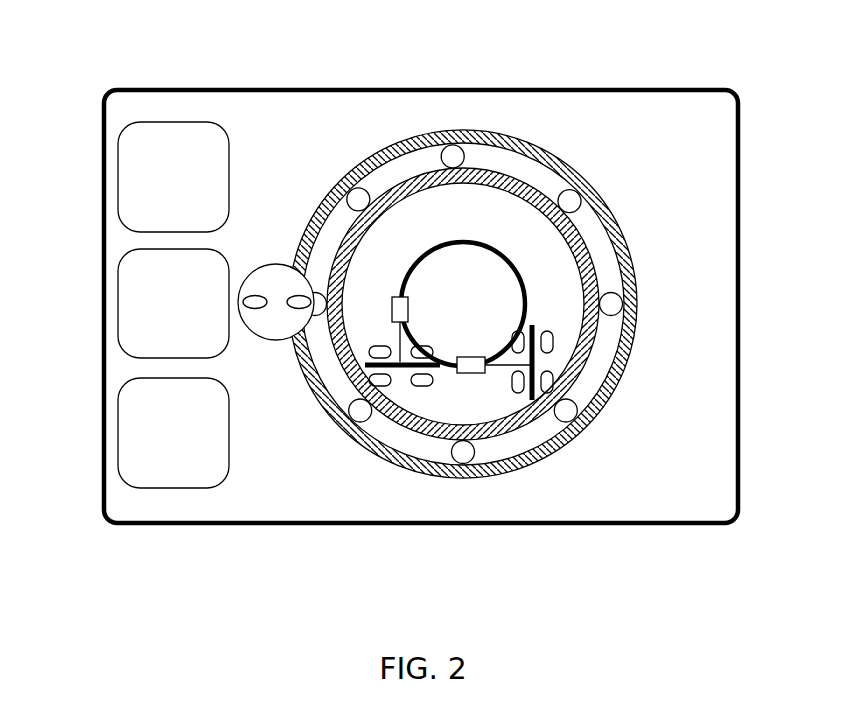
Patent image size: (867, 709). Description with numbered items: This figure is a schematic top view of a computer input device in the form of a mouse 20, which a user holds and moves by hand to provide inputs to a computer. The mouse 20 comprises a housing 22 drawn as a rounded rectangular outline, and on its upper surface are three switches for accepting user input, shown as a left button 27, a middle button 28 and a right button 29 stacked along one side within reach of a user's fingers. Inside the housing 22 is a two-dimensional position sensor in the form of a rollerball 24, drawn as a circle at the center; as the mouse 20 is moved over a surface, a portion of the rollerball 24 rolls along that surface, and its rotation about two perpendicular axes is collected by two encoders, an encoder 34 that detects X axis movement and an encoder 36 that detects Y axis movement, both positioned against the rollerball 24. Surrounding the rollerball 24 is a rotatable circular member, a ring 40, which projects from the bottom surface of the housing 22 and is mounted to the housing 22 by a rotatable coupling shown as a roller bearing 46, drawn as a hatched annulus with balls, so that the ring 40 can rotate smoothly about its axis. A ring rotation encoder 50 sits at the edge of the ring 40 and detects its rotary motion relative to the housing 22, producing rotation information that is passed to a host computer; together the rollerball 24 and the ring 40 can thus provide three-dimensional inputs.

The mouse 20 is at (425, 305).
The housing 22 is at (622, 88).
The rollerball 24 is at (474, 284).
The left button 27 is at (165, 433).
The middle button 28 is at (165, 301).
The right button 29 is at (165, 175).
The encoder 34 is at (512, 401).
The encoder 36 is at (403, 388).
The ring 40 is at (394, 140).
The roller bearing 46 is at (338, 188).
The ring rotation encoder 50 is at (268, 347).